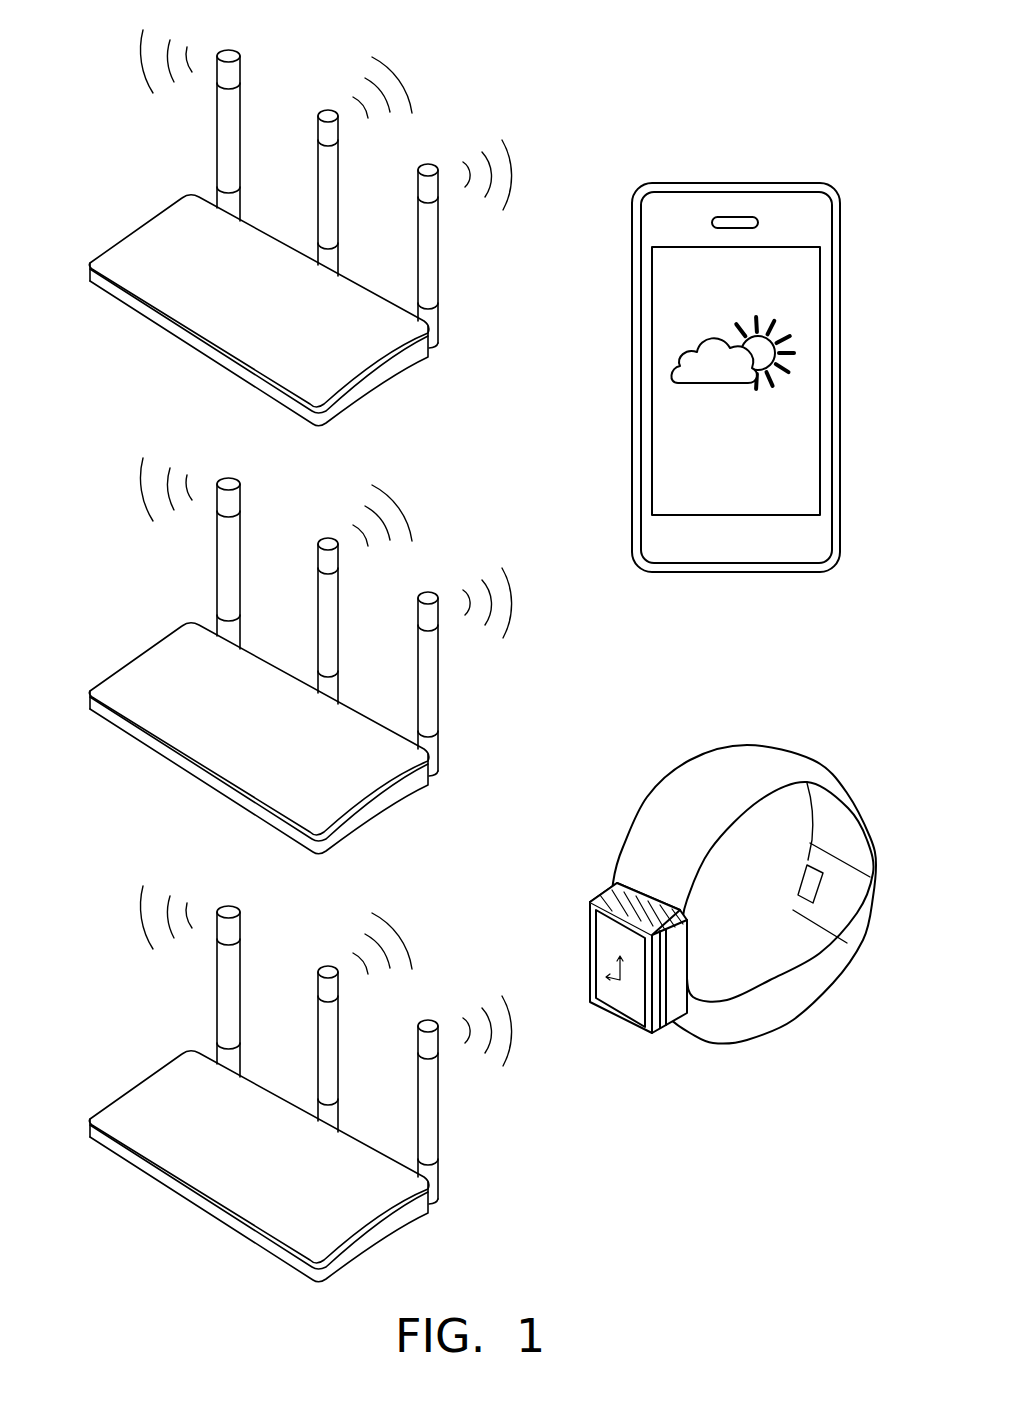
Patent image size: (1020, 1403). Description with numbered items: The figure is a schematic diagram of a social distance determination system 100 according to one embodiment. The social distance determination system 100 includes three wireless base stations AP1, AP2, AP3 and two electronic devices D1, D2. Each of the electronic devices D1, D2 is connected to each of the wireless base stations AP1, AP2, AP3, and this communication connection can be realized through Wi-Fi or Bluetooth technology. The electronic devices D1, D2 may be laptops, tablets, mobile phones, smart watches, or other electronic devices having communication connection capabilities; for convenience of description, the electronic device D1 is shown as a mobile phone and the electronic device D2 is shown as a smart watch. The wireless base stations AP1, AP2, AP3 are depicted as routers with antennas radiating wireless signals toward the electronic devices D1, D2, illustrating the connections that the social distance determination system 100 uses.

The social distance determination system 100 is at (840, 32).
The wireless base station AP1 is at (170, 230).
The wireless base station AP2 is at (292, 656).
The wireless base station AP3 is at (292, 1084).
The electronic device D1 is at (735, 183).
The electronic device D2 is at (770, 767).